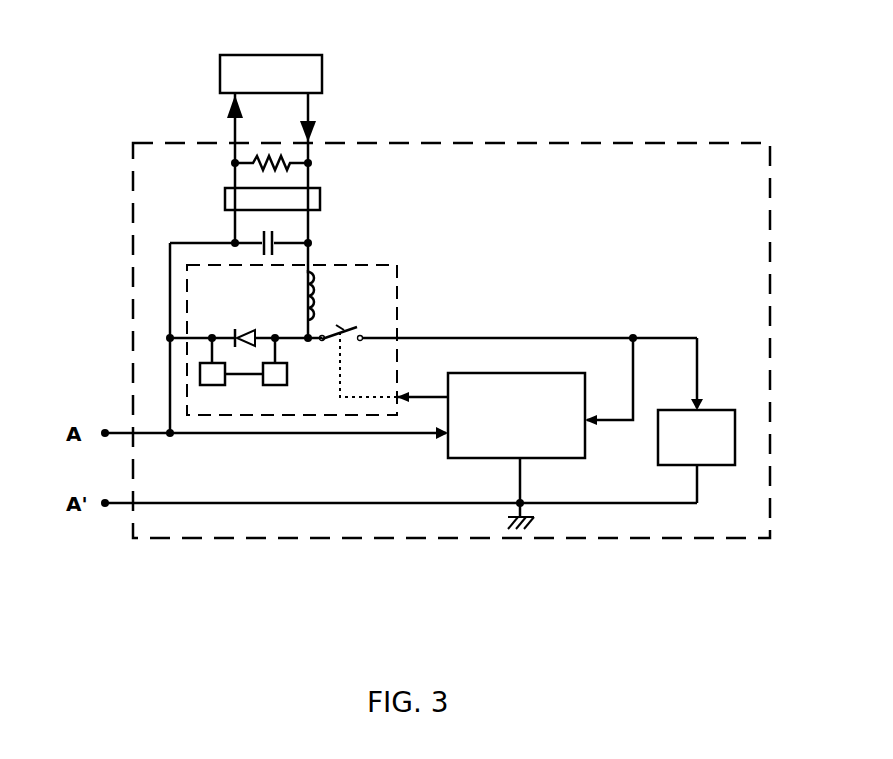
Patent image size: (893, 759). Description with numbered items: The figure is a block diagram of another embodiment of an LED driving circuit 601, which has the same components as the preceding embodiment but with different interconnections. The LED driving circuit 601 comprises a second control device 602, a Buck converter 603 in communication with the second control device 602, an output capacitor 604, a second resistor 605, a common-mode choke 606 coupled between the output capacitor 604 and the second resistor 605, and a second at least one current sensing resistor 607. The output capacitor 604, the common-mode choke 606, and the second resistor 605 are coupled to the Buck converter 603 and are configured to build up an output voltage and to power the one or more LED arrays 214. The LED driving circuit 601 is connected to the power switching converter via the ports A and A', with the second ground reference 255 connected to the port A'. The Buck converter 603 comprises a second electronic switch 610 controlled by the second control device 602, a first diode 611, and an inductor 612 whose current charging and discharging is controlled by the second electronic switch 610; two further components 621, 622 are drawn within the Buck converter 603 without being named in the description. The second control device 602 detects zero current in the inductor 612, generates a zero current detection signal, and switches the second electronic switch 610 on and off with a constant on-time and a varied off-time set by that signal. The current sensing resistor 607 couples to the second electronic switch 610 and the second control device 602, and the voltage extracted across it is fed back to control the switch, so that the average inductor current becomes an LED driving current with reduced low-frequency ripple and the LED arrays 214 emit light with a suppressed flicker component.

The one or more LED arrays 214 is at (220, 57).
The LED driving circuit 601 is at (556, 141).
The second control device 602 is at (508, 373).
The Buck converter 603 is at (404, 305).
The output capacitor 604 is at (274, 240).
The second resistor 605 is at (287, 157).
The common-mode choke 606 is at (225, 200).
The second at least one current sensing resistor 607 is at (719, 408).
The second electronic switch 610 is at (337, 341).
The first diode 611 is at (238, 330).
The inductor 612 is at (318, 290).
The first component 621 is at (215, 385).
The second component 622 is at (280, 385).
The second ground reference 255 is at (517, 531).